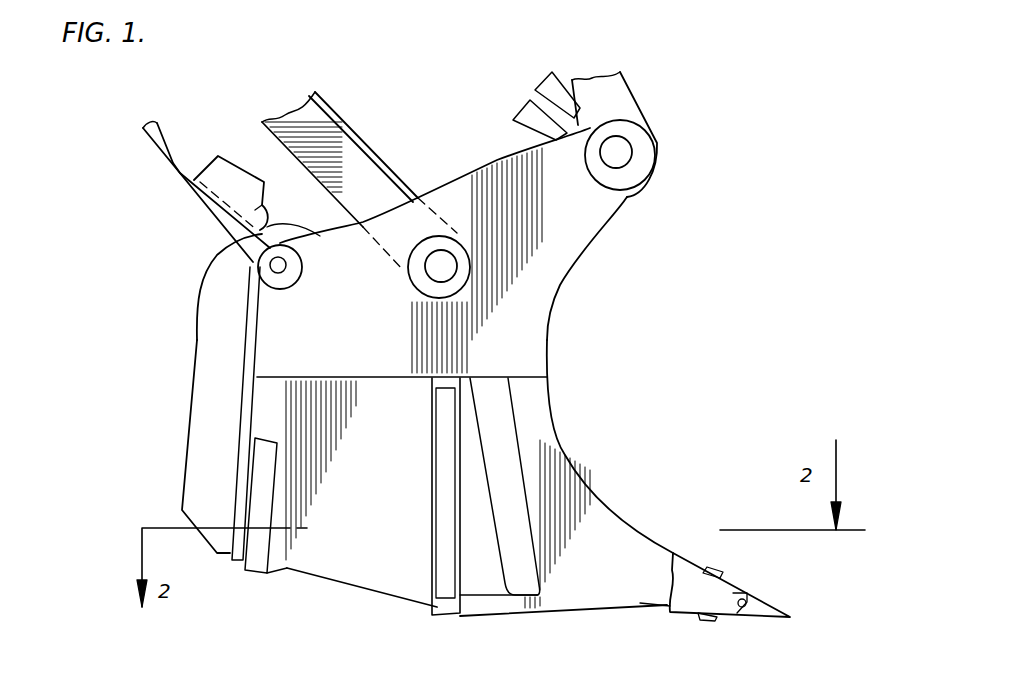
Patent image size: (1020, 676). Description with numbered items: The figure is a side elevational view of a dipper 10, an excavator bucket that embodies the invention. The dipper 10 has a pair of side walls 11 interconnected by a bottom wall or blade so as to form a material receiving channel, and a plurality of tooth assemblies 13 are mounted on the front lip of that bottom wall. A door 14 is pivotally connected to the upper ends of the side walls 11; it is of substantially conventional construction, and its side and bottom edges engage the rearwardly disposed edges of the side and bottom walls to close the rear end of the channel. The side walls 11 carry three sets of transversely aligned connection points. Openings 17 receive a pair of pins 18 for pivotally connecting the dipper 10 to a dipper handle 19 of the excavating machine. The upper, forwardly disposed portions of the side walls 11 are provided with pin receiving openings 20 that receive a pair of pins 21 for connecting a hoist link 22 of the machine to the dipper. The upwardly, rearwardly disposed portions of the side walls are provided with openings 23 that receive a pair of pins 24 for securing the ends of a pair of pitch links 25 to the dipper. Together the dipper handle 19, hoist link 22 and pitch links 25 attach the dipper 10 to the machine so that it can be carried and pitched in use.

The dipper 10 is at (143, 250).
The side walls 11 is at (530, 330).
The tooth assemblies 13 is at (755, 588).
The door 14 is at (210, 414).
The openings 17 is at (453, 262).
The pins 18 is at (432, 272).
The dipper handle 19 is at (355, 130).
The pin receiving openings 20 is at (628, 152).
The pins 21 is at (618, 166).
The hoist link 22 is at (615, 89).
The openings 23 is at (288, 265).
The pins 24 is at (281, 272).
The pitch links 25 is at (165, 148).